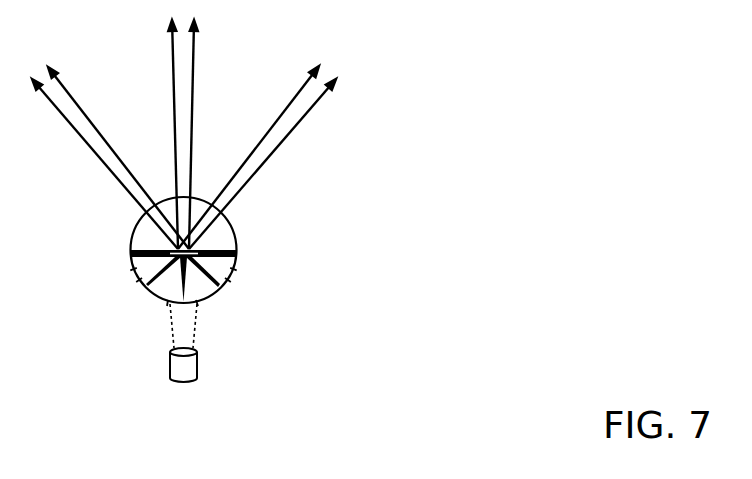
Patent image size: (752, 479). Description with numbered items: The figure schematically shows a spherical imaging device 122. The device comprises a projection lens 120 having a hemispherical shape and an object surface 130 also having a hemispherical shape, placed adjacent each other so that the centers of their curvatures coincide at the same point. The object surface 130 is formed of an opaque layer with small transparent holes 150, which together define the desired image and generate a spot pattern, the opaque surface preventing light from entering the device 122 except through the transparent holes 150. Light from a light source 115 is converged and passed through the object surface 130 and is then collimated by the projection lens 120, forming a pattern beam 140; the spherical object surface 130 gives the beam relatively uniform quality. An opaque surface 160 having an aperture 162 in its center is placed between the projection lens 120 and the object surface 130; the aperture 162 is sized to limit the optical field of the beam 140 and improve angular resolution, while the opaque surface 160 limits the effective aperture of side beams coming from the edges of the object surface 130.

The light source 115 is at (170, 370).
The projection lens 120 is at (229, 238).
The spherical imaging device 122 is at (502, 96).
The object surface 130 is at (168, 303).
The pattern beam 140 is at (298, 127).
The transparent holes 150 is at (138, 284).
The opaque surface 160 is at (130, 250).
The aperture 162 is at (208, 289).